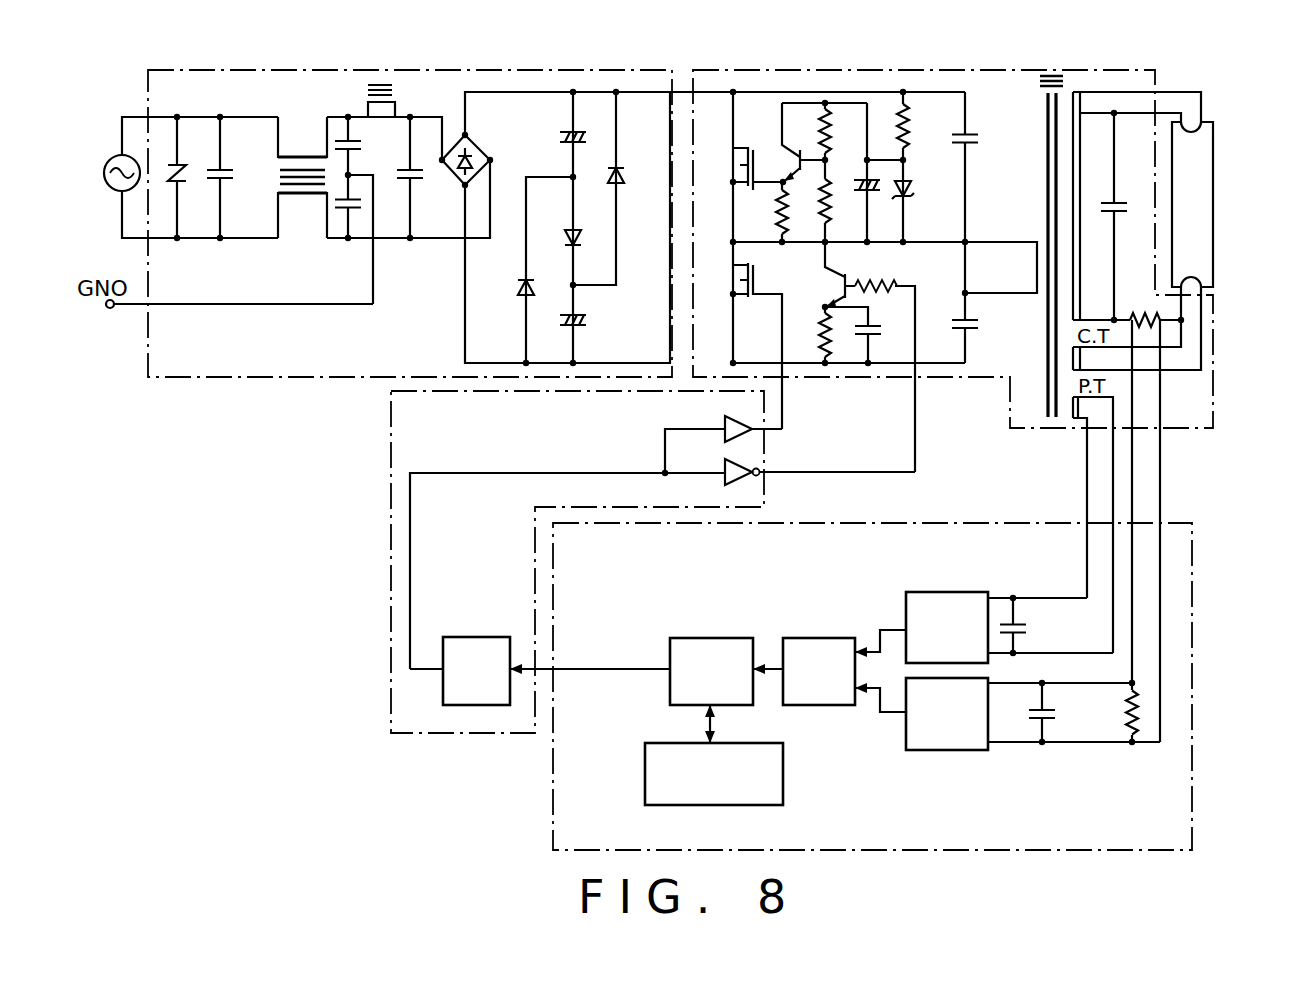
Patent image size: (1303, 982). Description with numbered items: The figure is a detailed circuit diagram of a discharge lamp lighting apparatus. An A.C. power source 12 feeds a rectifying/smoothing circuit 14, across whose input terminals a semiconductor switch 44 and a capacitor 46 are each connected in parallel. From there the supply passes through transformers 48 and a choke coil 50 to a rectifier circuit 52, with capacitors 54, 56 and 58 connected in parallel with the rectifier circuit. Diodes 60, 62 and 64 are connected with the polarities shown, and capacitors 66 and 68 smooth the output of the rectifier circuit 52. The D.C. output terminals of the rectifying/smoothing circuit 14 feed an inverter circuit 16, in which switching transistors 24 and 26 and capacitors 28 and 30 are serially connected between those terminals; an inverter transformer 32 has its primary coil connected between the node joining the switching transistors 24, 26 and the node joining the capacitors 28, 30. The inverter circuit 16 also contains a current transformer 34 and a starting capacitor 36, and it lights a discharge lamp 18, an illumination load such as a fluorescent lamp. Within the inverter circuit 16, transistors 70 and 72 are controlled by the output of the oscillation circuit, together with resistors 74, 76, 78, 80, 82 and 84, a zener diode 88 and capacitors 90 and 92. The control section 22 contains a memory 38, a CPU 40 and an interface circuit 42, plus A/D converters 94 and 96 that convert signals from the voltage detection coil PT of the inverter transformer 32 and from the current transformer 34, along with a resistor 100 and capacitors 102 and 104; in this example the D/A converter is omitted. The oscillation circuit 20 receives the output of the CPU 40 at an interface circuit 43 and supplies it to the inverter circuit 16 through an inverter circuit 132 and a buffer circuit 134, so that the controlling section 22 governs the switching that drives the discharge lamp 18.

The A.C. power source 12 is at (104, 174).
The rectifying/smoothing circuit 14 is at (147, 90).
The inverter circuit 16 is at (1155, 72).
The discharge lamp 18 is at (1213, 206).
The oscillation circuit 20 is at (391, 497).
The control section 22 is at (553, 812).
The switching transistor 24 is at (740, 165).
The switching transistor 26 is at (724, 280).
The capacitor 28 is at (981, 146).
The capacitor 30 is at (980, 325).
The inverter transformer 32 is at (1044, 312).
The current transformer 34 is at (1185, 330).
The starting capacitor 36 is at (1128, 213).
The memory 38 is at (786, 780).
The CPU 40 is at (712, 638).
The interface circuit 42 is at (824, 638).
The interface circuit 43 is at (480, 637).
The semiconductor switch 44 is at (180, 185).
The capacitor 46 is at (232, 176).
The transformer 48 is at (297, 205).
The choke coil 50 is at (396, 90).
The rectifier circuit 52 is at (502, 144).
The capacitor 54 is at (362, 146).
The capacitor 56 is at (344, 212).
The capacitor 58 is at (425, 180).
The diode 60 is at (600, 220).
The diode 62 is at (520, 286).
The diode 64 is at (624, 178).
The capacitor 66 is at (560, 137).
The capacitor 68 is at (588, 321).
The transistor 70 is at (778, 160).
The transistor 72 is at (836, 286).
The resistor 74 is at (772, 206).
The resistor 76 is at (822, 148).
The resistor 78 is at (818, 190).
The resistor 80 is at (818, 346).
The resistor 82 is at (874, 286).
The resistor 84 is at (906, 140).
The zener diode 88 is at (912, 188).
The capacitor 90 is at (848, 188).
The capacitor 92 is at (872, 328).
The A/D converter 94 is at (948, 592).
The A/D converter 96 is at (955, 750).
The resistor 100 is at (1128, 734).
The capacitor 102 is at (1027, 632).
The capacitor 104 is at (1050, 706).
The inverter circuit 132 is at (725, 470).
The buffer circuit 134 is at (725, 426).